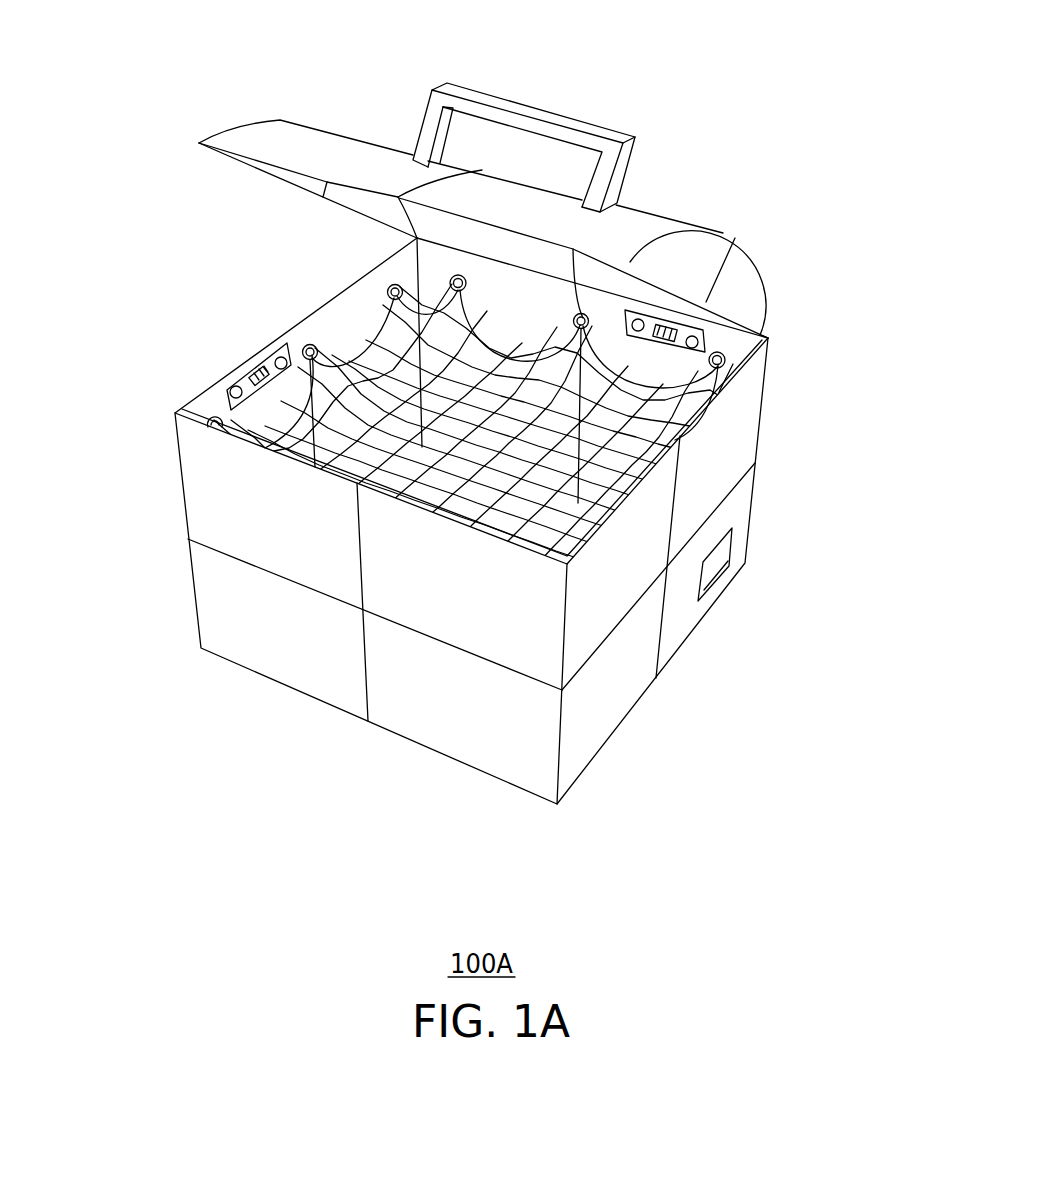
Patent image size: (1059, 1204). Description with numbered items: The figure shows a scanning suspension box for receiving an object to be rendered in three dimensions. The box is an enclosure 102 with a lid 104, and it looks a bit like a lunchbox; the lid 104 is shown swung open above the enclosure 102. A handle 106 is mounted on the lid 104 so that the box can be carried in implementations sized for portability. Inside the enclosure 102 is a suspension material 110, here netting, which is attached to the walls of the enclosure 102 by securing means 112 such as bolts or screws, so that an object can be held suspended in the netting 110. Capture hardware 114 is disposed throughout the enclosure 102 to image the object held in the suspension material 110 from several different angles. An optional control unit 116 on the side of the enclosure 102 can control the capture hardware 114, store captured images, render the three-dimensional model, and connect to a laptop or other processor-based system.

The enclosure 102 is at (170, 442).
The lid 104 is at (700, 252).
The handle 106 is at (612, 127).
The suspension material 110 is at (345, 362).
The securing means 112 is at (758, 358).
The capture hardware 114 is at (250, 395).
The control unit 116 is at (735, 568).